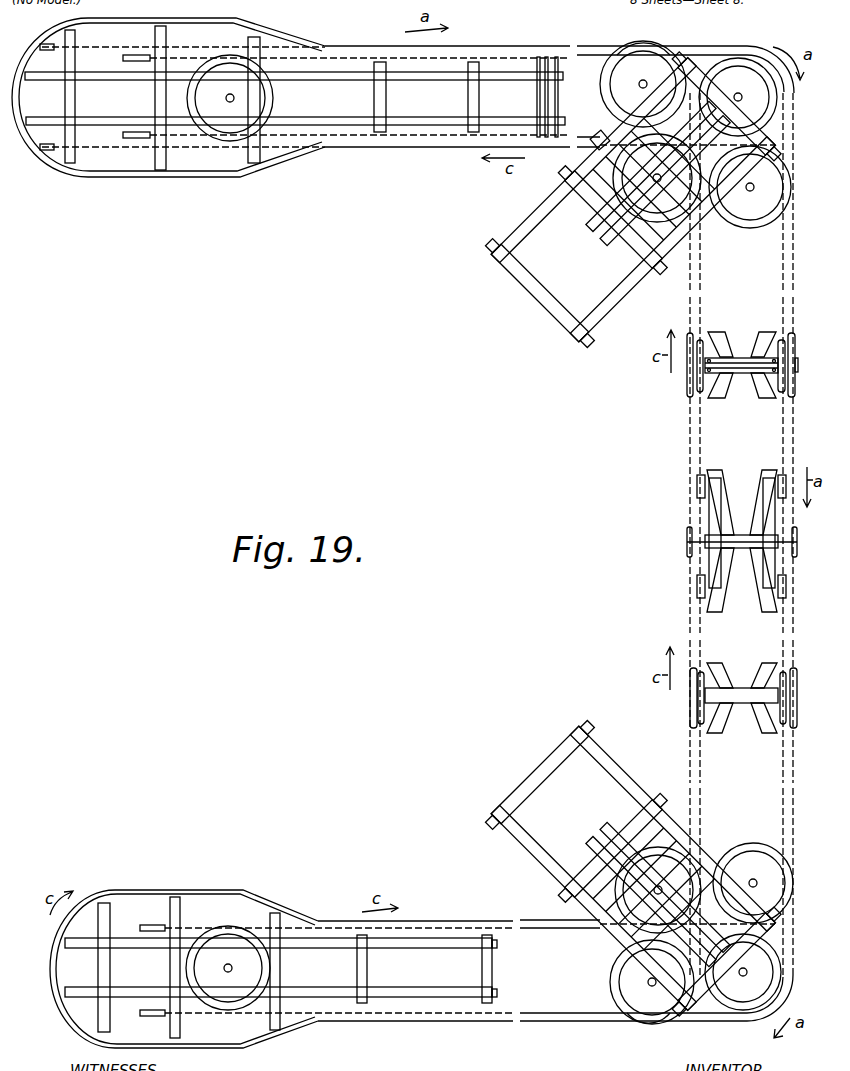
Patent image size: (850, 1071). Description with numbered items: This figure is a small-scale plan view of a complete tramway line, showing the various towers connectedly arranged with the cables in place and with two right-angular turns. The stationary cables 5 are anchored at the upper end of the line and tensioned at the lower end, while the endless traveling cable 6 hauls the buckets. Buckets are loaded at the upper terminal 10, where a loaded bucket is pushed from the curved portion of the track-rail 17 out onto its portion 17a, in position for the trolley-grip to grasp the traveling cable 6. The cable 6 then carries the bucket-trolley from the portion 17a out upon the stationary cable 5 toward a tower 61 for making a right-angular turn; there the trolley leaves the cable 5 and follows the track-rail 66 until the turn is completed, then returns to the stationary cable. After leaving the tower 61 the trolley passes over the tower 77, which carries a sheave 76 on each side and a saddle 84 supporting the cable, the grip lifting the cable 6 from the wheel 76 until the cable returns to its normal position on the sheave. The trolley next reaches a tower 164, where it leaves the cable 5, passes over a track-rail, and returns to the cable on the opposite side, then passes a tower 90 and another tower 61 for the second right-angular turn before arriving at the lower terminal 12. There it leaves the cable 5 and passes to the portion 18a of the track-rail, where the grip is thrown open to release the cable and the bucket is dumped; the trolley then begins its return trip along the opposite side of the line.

The upper terminal 10 is at (291, 102).
The lower terminal 12 is at (281, 954).
The track-rail 17 is at (238, 34).
The portion of the track-rail 17a is at (365, 43).
The portion of the track-rail 18a is at (420, 1019).
The stationary cable 5 is at (600, 46).
The endless traveling cable 6 is at (598, 55).
The tower 61 is at (633, 534).
The track-rail 66 is at (792, 102).
The sheave 76 is at (792, 327).
The tower 77 is at (732, 358).
The saddle 84 is at (795, 352).
The tower 90 is at (743, 706).
The tower 164 is at (742, 537).